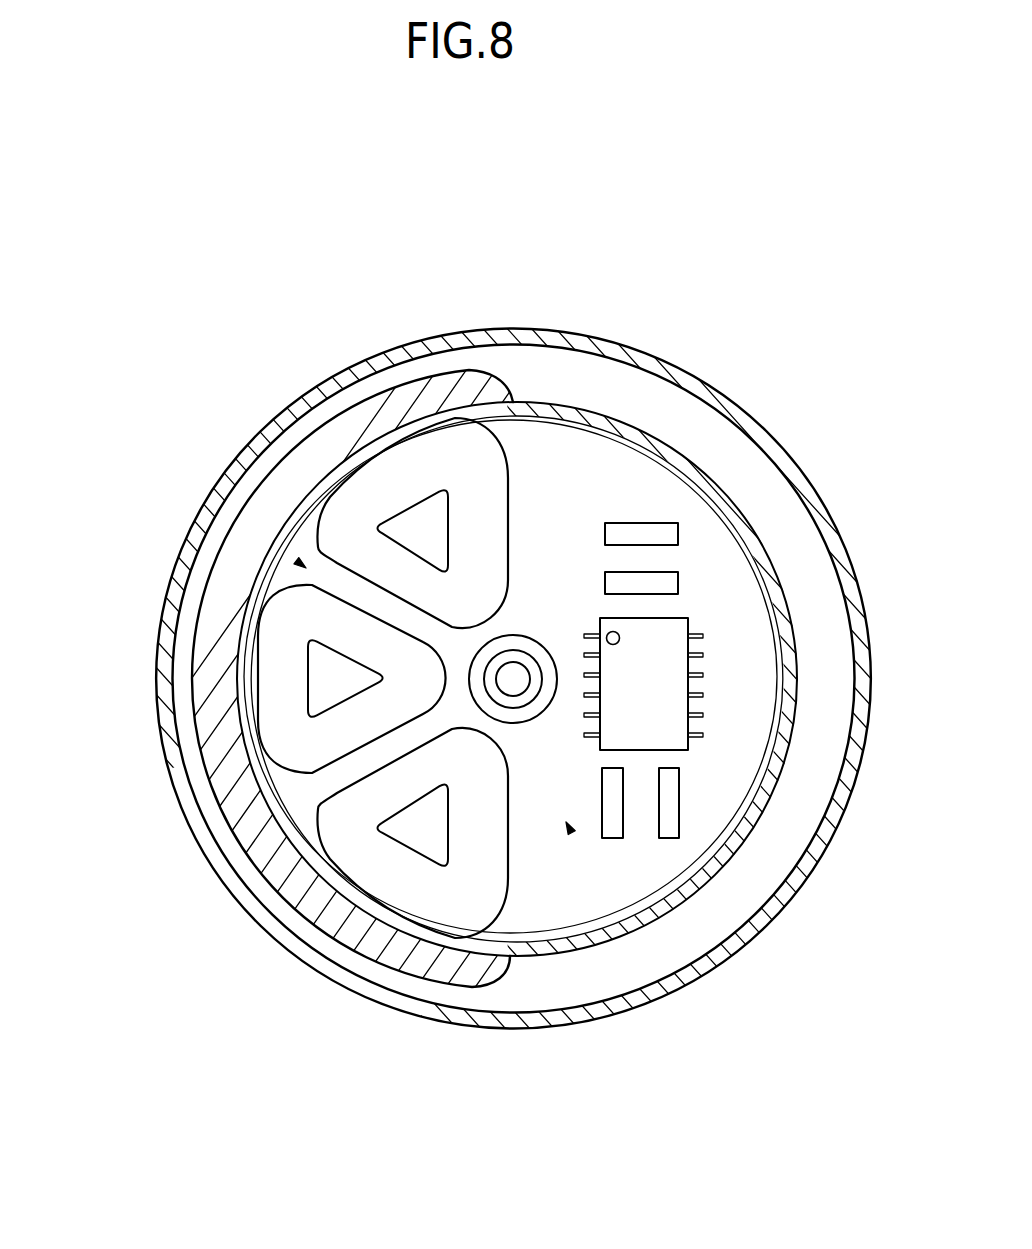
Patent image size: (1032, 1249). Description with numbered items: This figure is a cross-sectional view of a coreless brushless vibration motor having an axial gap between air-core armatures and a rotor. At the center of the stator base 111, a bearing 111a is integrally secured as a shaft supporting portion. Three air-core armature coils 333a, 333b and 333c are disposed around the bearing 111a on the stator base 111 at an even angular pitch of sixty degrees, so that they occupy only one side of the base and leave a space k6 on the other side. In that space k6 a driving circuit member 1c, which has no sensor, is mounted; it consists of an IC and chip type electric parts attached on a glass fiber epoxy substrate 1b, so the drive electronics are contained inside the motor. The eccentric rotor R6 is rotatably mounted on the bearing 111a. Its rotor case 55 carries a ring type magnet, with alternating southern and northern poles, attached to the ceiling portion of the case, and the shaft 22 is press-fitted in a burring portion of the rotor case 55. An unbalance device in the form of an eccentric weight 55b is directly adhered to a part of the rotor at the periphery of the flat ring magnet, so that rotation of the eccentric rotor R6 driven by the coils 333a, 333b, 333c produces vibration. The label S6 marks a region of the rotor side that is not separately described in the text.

The rotor case 55 is at (722, 480).
The eccentric weight 55b is at (414, 958).
The stator base 111 is at (625, 440).
The bearing 111a is at (488, 672).
The shaft 22 is at (518, 672).
The air-core armature coil 333a is at (417, 463).
The air-core armature coil 333b is at (280, 728).
The air-core armature coil 333c is at (372, 862).
The glass fiber epoxy substrate 1b is at (733, 770).
The driving circuit member 1c is at (670, 683).
The eccentric rotor R6 is at (322, 450).
The gap region S6 is at (300, 560).
The space k6 is at (566, 823).